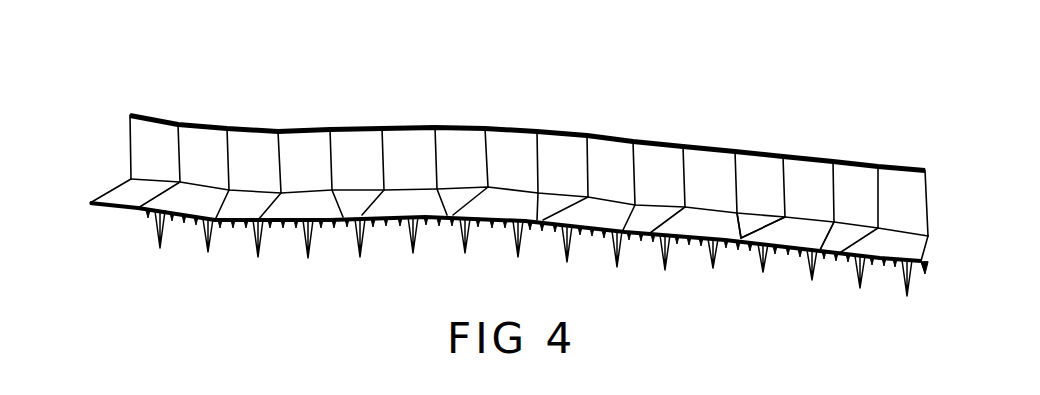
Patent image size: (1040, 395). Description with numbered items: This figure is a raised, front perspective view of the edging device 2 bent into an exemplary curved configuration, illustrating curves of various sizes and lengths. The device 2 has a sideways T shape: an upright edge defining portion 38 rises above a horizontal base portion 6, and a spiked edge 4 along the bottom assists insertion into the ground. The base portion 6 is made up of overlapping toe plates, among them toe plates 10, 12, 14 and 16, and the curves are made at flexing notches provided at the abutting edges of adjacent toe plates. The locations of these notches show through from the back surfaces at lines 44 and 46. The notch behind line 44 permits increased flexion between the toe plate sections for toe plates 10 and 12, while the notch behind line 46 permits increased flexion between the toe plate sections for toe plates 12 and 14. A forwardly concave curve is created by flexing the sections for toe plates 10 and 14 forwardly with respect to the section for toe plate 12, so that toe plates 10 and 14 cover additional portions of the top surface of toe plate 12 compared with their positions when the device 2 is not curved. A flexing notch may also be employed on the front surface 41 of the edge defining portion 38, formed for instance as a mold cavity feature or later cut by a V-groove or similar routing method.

The edging device 2 is at (607, 60).
The spiked edge 4 is at (946, 283).
The horizontal base portion 6 is at (70, 191).
The toe plate 10 is at (697, 221).
The toe plate 12 is at (742, 228).
The toe plate 14 is at (793, 229).
The toe plate 16 is at (840, 244).
The edge defining portion 38 is at (946, 194).
The front surface 41 is at (855, 178).
The line 44 is at (733, 164).
The line 46 is at (785, 168).